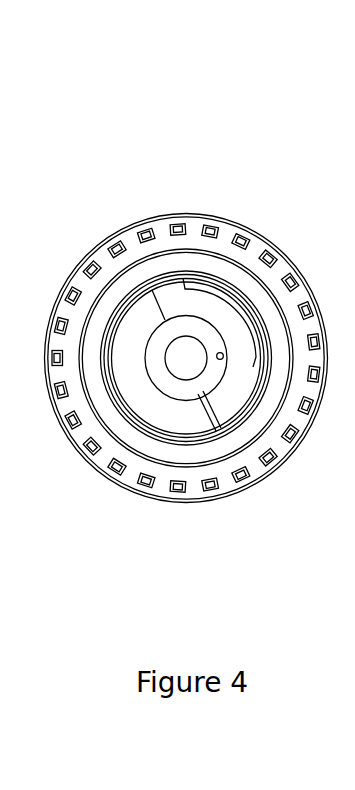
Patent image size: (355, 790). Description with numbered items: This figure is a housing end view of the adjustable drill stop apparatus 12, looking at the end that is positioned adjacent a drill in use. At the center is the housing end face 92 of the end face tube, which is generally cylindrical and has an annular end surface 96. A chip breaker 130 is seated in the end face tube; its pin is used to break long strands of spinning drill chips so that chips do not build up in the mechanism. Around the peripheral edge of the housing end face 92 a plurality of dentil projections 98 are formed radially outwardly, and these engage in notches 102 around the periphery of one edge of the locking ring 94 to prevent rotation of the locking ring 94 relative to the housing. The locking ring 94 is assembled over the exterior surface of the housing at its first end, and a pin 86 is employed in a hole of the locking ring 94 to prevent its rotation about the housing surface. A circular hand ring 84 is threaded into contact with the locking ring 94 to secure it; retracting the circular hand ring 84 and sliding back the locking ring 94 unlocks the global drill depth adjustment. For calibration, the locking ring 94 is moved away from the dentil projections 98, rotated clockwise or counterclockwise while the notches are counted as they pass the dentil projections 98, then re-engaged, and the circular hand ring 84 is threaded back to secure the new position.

The apparatus 12 is at (188, 158).
The circular hand ring 84 is at (285, 258).
The dentil projections 98 is at (104, 247).
The locking ring 94 is at (197, 499).
The annular end surface 96 is at (97, 392).
The chip breaker 130 is at (205, 393).
The pin 86 is at (269, 325).
The notches 102 is at (115, 223).
The housing end face 92 is at (102, 462).